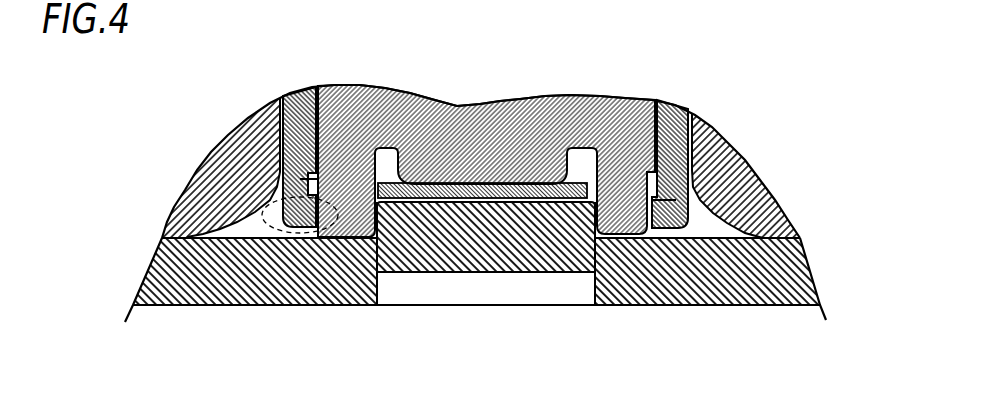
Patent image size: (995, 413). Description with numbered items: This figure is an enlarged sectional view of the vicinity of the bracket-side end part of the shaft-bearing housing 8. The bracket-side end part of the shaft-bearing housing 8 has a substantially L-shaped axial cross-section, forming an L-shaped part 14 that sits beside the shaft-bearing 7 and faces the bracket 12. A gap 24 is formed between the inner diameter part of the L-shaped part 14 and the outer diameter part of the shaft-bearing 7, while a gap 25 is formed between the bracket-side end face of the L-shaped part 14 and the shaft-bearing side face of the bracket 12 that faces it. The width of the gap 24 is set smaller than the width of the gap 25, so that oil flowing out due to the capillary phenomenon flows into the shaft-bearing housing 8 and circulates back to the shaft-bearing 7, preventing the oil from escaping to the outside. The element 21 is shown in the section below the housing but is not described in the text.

The shaft-bearing 7 is at (352, 222).
The shaft-bearing housing 8 is at (672, 122).
The bracket 12 is at (190, 290).
The L-shaped part 14 is at (276, 200).
The mounting block 21 is at (488, 242).
The gap 24 is at (660, 201).
The gap 25 is at (670, 238).